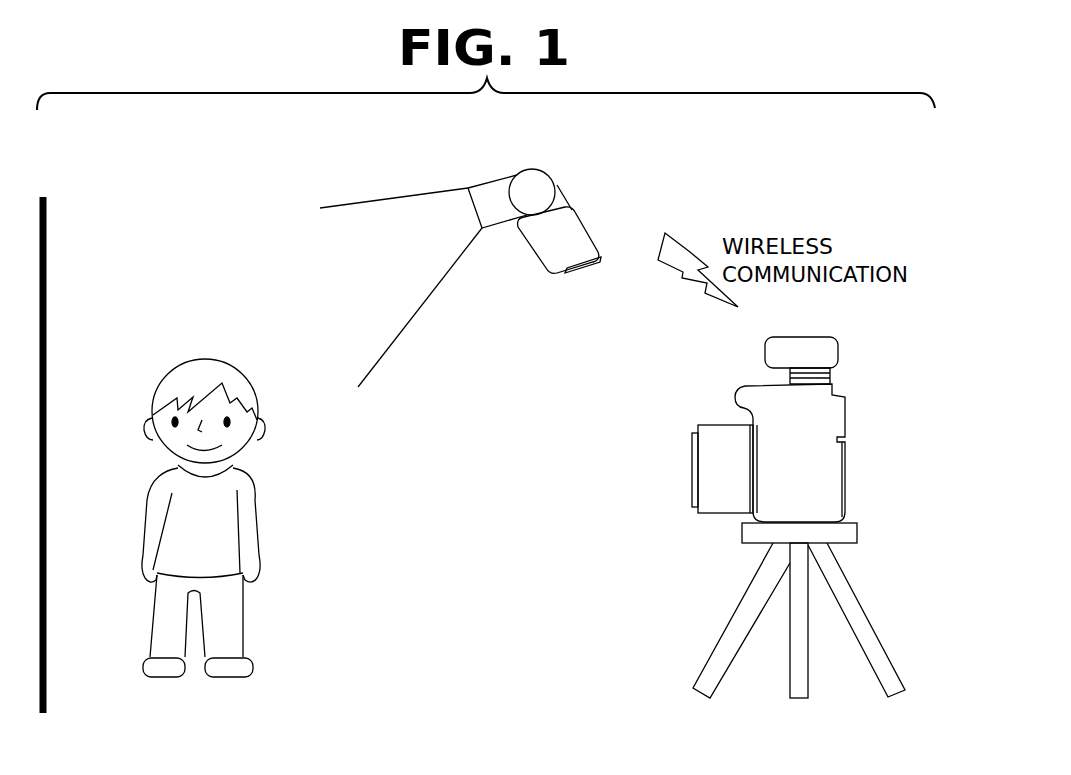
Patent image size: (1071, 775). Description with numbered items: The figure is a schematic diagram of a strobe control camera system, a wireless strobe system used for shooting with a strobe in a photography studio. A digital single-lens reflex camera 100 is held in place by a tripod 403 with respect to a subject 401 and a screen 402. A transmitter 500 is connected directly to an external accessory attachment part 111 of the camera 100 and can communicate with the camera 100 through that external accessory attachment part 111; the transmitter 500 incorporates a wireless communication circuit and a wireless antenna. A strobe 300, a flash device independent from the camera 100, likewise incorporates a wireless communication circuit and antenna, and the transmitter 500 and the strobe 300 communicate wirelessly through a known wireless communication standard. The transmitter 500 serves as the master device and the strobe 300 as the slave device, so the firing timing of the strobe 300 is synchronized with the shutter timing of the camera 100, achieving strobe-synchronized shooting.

The camera 100 is at (846, 480).
The external accessory attachment part 111 is at (830, 383).
The strobe 300 is at (555, 173).
The subject 401 is at (250, 535).
The screen 402 is at (47, 233).
The tripod 403 is at (858, 600).
The transmitter 500 is at (840, 352).